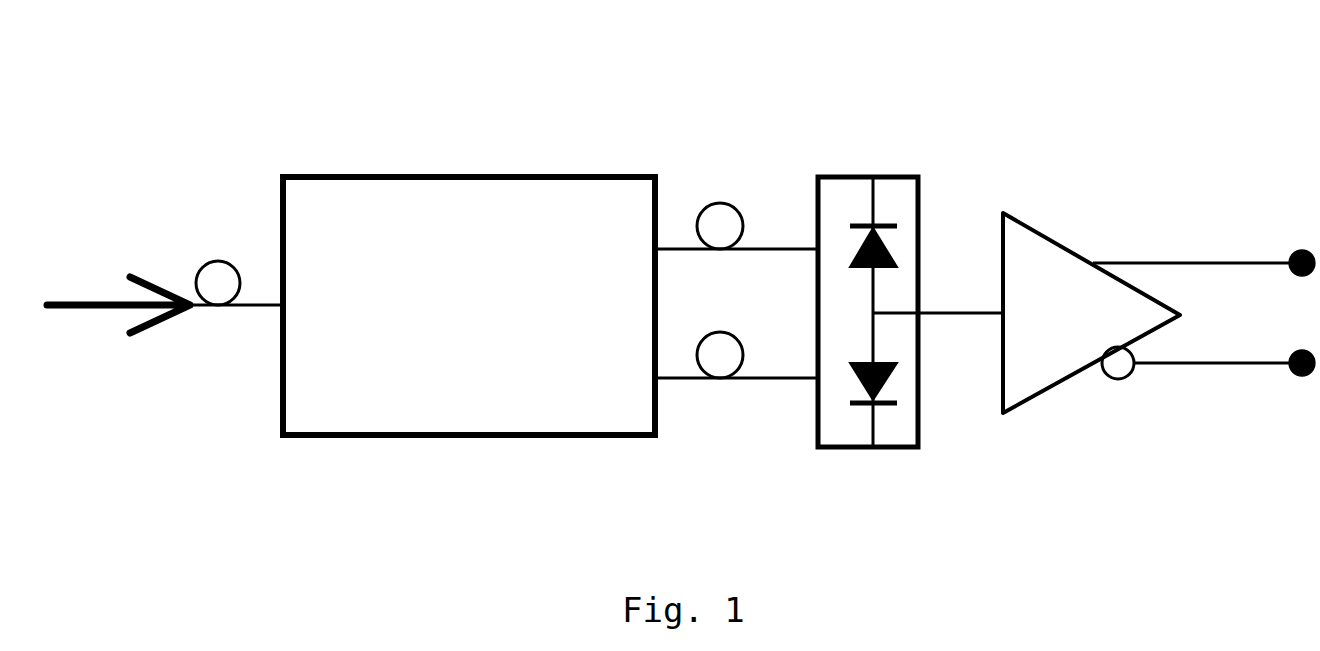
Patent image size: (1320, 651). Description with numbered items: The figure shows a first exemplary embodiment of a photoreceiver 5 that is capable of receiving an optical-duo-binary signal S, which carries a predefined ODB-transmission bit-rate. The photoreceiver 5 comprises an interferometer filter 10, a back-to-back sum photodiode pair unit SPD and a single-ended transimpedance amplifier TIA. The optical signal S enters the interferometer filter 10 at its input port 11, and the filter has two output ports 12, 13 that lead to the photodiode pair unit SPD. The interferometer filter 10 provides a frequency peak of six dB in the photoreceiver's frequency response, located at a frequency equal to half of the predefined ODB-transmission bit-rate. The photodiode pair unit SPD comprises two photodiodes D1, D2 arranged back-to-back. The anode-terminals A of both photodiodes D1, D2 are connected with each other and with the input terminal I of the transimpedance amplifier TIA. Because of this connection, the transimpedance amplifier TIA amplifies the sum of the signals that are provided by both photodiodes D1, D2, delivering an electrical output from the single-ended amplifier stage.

The photoreceiver 5 is at (497, 87).
The interferometer filter 10 is at (428, 174).
The input port 11 is at (278, 310).
The output port 12 is at (658, 240).
The output port 13 is at (658, 380).
The optical-duo-binary signal S is at (118, 284).
The back-to-back sum photodiode pair unit SPD is at (812, 277).
The photodiode D1 is at (883, 250).
The photodiode D2 is at (888, 382).
The anode-terminals A is at (875, 290).
The input terminal I is at (1000, 317).
The single-ended transimpedance amplifier TIA is at (1159, 313).